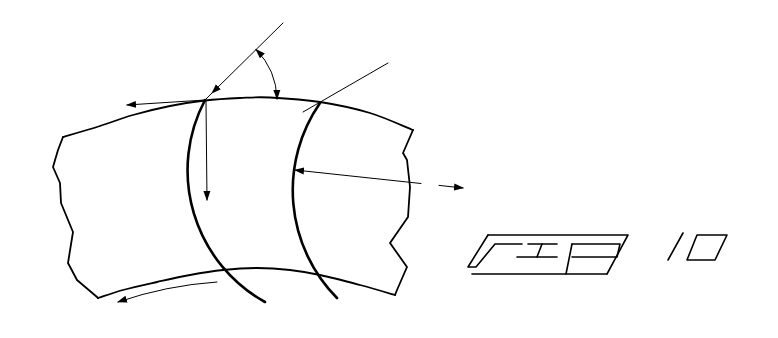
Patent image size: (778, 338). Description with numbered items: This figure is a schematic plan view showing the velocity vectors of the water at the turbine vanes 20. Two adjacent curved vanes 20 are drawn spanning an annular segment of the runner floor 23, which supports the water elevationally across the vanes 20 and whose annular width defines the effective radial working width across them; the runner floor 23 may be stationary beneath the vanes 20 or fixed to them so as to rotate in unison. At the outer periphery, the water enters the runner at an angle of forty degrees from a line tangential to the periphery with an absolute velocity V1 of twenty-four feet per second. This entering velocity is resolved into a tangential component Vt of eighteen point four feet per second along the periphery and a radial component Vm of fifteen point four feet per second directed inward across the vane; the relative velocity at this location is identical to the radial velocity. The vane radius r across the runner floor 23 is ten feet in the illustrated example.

The vanes 20 is at (202, 232).
The runner floor 23 is at (233, 197).
The absolute velocity of the water entering the runner V1 is at (240, 62).
The tangential component of velocity Vt is at (160, 98).
The radial component of water velocity Vm is at (208, 158).
The vane radius r is at (379, 182).